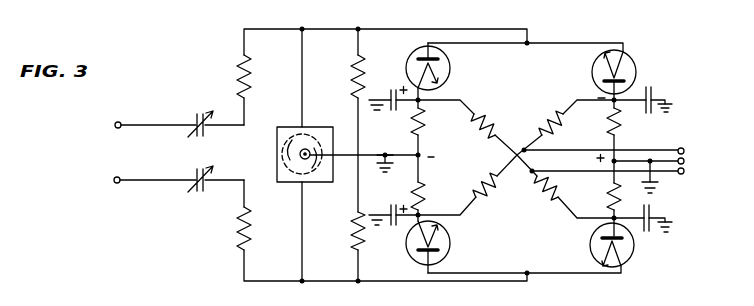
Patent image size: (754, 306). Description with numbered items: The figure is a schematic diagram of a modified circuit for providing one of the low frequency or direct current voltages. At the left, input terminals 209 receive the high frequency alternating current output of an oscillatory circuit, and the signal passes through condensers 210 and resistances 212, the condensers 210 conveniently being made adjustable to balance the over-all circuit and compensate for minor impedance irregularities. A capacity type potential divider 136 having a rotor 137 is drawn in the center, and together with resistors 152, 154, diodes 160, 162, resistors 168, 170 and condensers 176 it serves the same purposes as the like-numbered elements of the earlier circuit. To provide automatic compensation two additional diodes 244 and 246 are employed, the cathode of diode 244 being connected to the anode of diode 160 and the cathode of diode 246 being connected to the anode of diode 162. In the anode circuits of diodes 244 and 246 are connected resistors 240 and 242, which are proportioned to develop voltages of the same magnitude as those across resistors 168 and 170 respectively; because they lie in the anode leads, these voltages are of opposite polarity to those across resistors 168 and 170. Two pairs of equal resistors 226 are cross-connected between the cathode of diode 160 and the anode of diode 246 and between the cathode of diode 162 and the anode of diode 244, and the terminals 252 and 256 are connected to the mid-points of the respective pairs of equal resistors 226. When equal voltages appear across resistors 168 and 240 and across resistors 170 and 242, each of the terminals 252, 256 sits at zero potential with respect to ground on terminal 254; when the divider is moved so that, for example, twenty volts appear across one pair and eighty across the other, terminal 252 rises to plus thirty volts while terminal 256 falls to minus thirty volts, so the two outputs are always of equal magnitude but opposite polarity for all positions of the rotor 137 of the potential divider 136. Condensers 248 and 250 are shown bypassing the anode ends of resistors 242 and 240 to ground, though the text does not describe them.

The capacity type potential divider 136 is at (277, 149).
The rotor 137 is at (328, 116).
The resistor 152 is at (352, 73).
The resistor 154 is at (352, 233).
The diode 160 is at (450, 63).
The diode 162 is at (449, 256).
The resistor 168 is at (412, 127).
The resistor 170 is at (412, 189).
The condensers 176 is at (391, 90).
The input terminals 209 is at (116, 130).
The condensers 210 is at (202, 164).
The resistances 212 is at (233, 66).
The equal resistors 226 is at (473, 123).
The resistor 240 is at (608, 130).
The resistor 242 is at (608, 196).
The diode 244 is at (624, 58).
The diode 246 is at (632, 250).
The capacitor 248 is at (653, 211).
The capacitor 250 is at (648, 88).
The terminal 252 is at (685, 150).
The terminal 254 is at (685, 161).
The terminal 256 is at (685, 172).